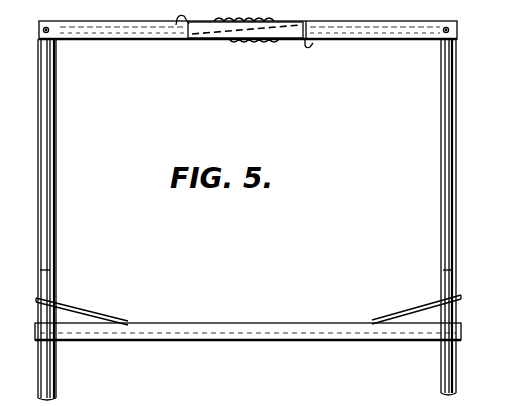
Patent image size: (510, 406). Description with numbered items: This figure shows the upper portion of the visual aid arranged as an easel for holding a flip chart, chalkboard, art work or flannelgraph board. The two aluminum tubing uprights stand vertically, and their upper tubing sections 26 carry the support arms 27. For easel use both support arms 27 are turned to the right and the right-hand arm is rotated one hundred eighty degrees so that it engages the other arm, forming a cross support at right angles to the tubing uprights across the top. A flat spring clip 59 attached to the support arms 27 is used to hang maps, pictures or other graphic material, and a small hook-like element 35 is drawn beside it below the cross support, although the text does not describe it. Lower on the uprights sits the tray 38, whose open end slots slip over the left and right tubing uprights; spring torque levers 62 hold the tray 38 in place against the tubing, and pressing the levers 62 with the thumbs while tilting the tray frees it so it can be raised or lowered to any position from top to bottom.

The tubing section 26 is at (36, 197).
The support arm 27 is at (147, 41).
The hook 35 is at (302, 47).
The tray 38 is at (271, 331).
The flat spring clip 59 is at (250, 46).
The spring torque lever 62 is at (109, 300).